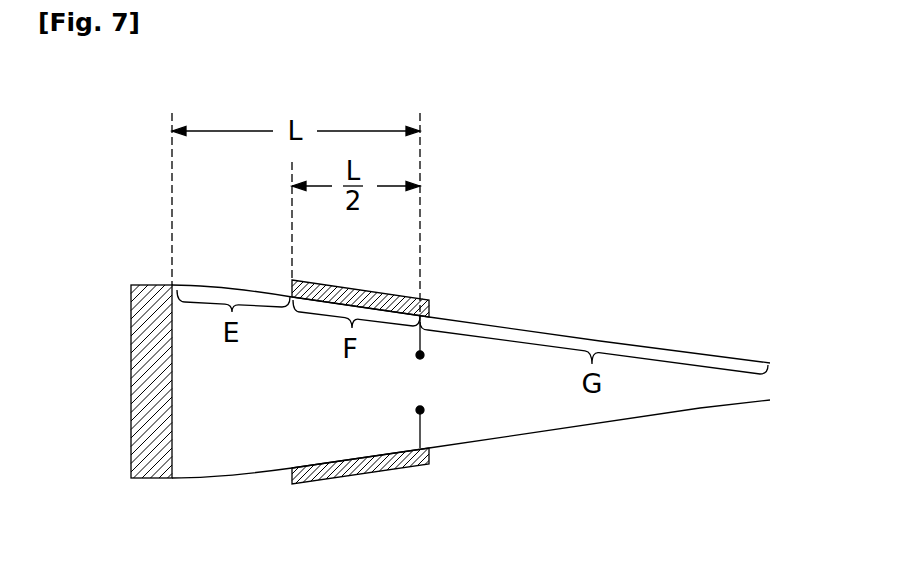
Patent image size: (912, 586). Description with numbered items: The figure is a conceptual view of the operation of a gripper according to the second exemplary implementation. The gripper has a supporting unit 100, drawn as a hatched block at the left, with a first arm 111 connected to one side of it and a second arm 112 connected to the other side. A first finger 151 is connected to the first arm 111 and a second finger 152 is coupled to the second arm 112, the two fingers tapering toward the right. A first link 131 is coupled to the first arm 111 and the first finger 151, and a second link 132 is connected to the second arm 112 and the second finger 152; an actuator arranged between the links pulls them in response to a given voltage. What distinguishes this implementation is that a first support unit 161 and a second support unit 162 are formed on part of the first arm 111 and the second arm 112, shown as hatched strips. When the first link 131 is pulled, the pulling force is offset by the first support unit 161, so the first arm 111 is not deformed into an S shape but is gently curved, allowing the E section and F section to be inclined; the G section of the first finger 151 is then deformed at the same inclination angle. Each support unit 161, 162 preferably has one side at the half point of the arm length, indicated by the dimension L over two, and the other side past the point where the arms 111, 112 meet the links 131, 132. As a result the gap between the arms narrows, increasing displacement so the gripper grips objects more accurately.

The supporting unit 100 is at (131, 387).
The first arm 111 is at (232, 285).
The second arm 112 is at (216, 477).
The first link 131 is at (420, 340).
The second link 132 is at (420, 425).
The first finger 151 is at (593, 340).
The second finger 152 is at (593, 425).
The first support unit 161 is at (355, 297).
The second support unit 162 is at (355, 467).